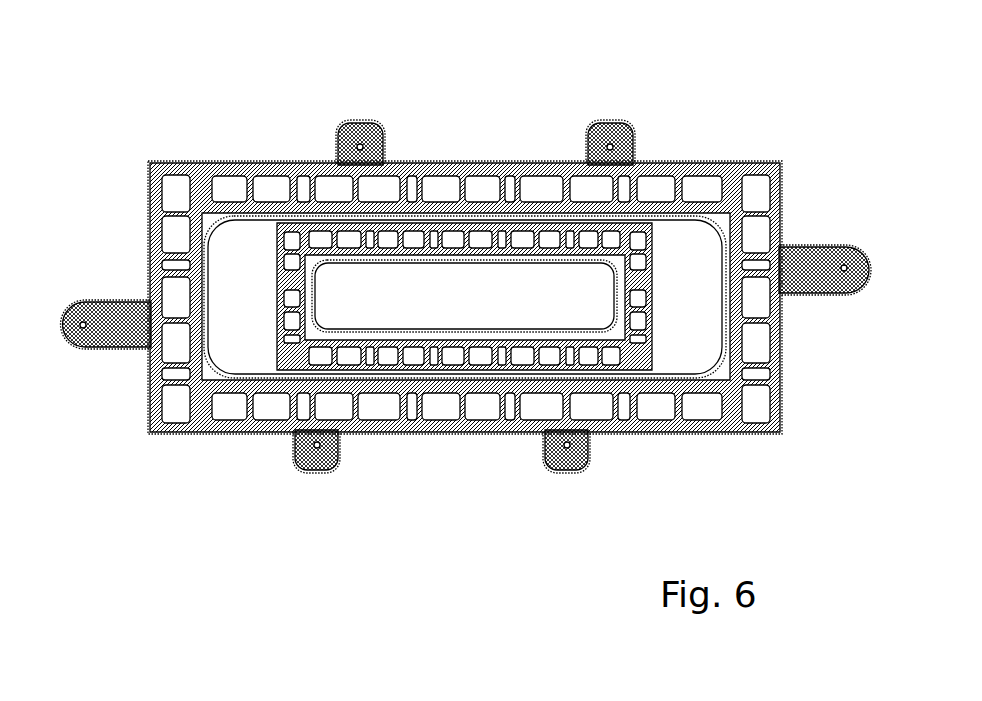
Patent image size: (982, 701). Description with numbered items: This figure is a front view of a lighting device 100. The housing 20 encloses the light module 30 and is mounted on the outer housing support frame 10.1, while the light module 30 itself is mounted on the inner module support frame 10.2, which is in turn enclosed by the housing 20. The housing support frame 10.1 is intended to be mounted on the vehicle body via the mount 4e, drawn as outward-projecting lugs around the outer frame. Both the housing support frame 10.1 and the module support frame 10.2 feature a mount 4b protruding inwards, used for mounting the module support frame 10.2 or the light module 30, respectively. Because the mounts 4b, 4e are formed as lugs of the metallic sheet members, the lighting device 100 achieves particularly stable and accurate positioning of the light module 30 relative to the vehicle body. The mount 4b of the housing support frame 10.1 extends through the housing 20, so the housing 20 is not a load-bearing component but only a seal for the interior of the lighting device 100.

The lighting device 100 is at (461, 286).
The housing support frame 10.1 is at (232, 160).
The module support frame 10.2 is at (327, 207).
The mount 4b is at (370, 215).
The mount 4e is at (293, 453).
The housing 20 is at (726, 222).
The light module 30 is at (478, 305).